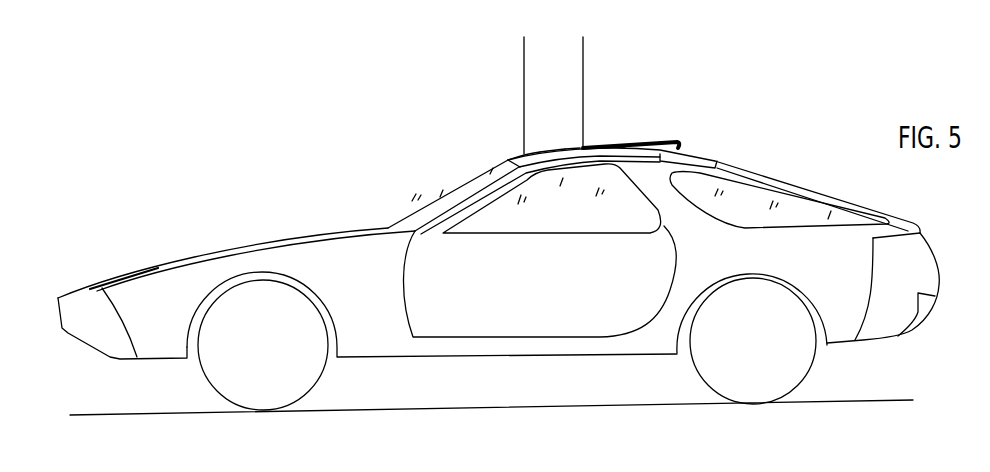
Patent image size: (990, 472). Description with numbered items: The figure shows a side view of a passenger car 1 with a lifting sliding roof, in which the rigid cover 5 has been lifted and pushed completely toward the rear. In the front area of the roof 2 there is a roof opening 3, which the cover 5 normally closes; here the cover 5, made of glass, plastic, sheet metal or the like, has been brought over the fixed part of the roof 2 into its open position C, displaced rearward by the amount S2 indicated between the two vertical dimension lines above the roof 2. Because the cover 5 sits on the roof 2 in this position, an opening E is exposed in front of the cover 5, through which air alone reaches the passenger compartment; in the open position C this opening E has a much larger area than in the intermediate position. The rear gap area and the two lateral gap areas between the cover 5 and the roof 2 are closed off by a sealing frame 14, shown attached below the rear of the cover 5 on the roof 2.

The passenger car 1 is at (219, 242).
The roof 2 is at (518, 155).
The roof opening 3 is at (553, 153).
The opening E is at (572, 153).
The open position C is at (617, 147).
The rigid cover 5 is at (646, 137).
The sealing frame 14 is at (610, 148).
The amount S2 is at (583, 53).